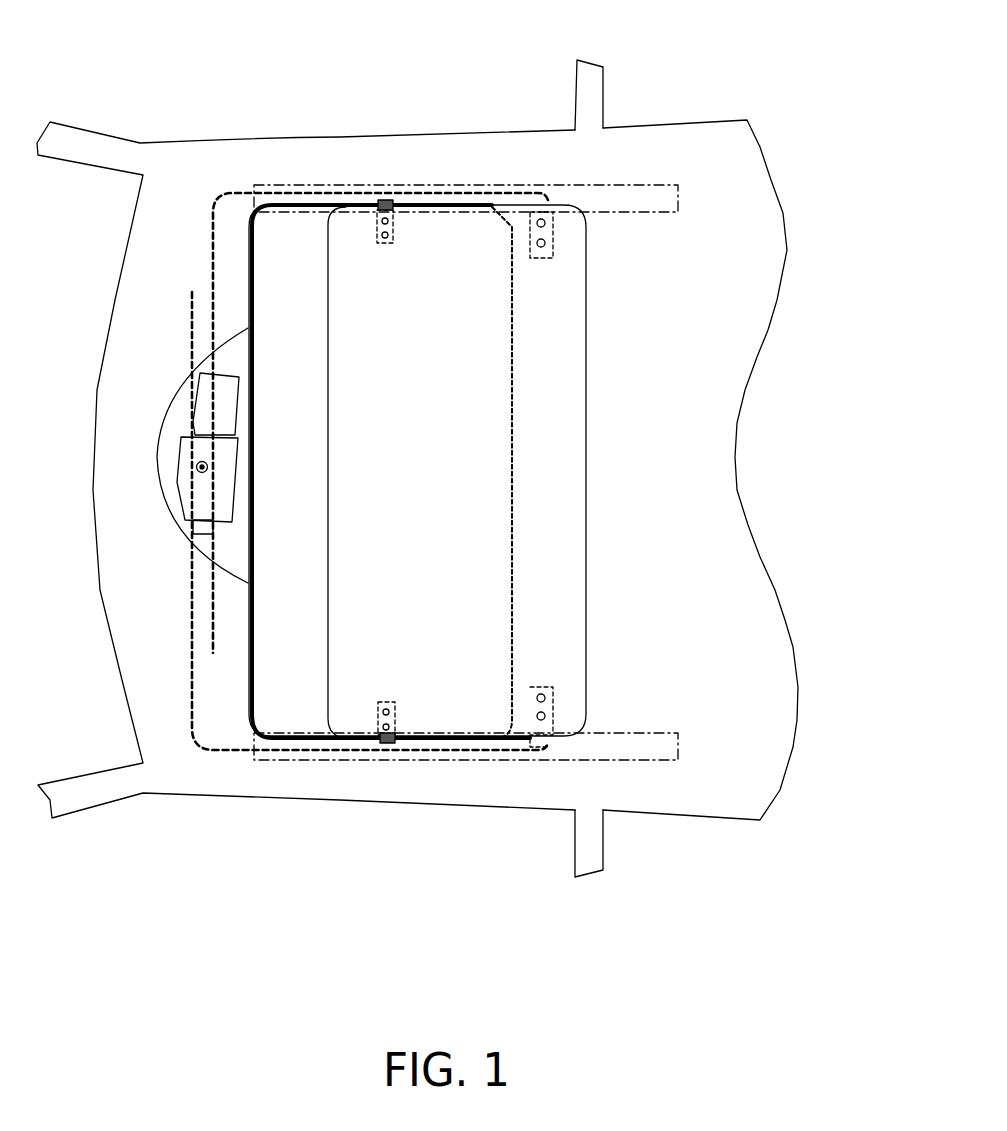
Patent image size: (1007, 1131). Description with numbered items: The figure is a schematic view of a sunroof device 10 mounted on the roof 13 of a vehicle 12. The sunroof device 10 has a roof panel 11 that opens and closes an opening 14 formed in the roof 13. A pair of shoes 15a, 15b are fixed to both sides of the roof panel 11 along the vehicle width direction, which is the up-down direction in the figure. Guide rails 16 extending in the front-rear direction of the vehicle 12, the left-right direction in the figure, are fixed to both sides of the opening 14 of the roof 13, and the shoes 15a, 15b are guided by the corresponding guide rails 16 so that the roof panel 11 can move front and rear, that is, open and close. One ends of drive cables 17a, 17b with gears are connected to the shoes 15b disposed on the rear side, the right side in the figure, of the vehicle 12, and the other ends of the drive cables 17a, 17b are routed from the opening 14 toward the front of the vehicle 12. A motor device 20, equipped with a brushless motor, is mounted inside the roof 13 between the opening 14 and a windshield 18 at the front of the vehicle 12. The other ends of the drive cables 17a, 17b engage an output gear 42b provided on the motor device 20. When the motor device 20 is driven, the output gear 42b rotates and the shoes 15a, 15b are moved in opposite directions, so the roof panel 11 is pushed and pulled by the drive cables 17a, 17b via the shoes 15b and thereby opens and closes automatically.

The sunroof device 10 is at (417, 483).
The roof panel 11 is at (545, 440).
The vehicle 12 is at (638, 128).
The roof 13 is at (343, 776).
The opening 14 is at (305, 480).
The shoe 15a is at (340, 207).
The shoe 15b is at (557, 224).
The guide rail 16 is at (652, 197).
The drive cable 17a is at (210, 215).
The drive cable 17b is at (192, 697).
The windshield 18 is at (68, 482).
The motor device 20 is at (143, 460).
The output gear 42b is at (202, 467).